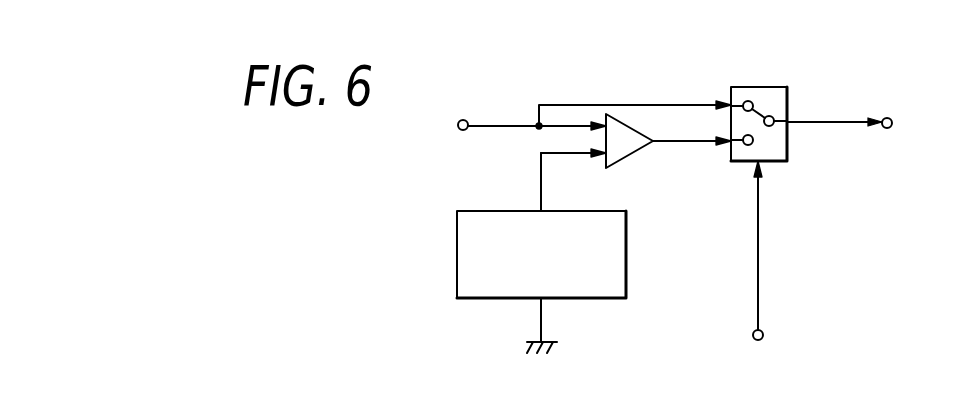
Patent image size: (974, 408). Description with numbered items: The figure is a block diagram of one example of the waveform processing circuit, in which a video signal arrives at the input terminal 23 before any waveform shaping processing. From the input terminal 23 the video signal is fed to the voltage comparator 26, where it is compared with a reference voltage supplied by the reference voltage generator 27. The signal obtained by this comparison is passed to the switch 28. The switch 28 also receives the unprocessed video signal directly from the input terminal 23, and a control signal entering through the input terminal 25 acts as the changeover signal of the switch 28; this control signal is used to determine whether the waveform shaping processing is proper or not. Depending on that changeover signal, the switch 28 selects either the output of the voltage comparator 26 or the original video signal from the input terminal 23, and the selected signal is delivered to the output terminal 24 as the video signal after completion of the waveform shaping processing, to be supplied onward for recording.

The input terminal 23 is at (458, 125).
The output terminal 24 is at (892, 123).
The input terminal for a control signal 25 is at (763, 337).
The voltage comparator 26 is at (641, 150).
The reference voltage generator 27 is at (457, 233).
The switch 28 is at (758, 87).